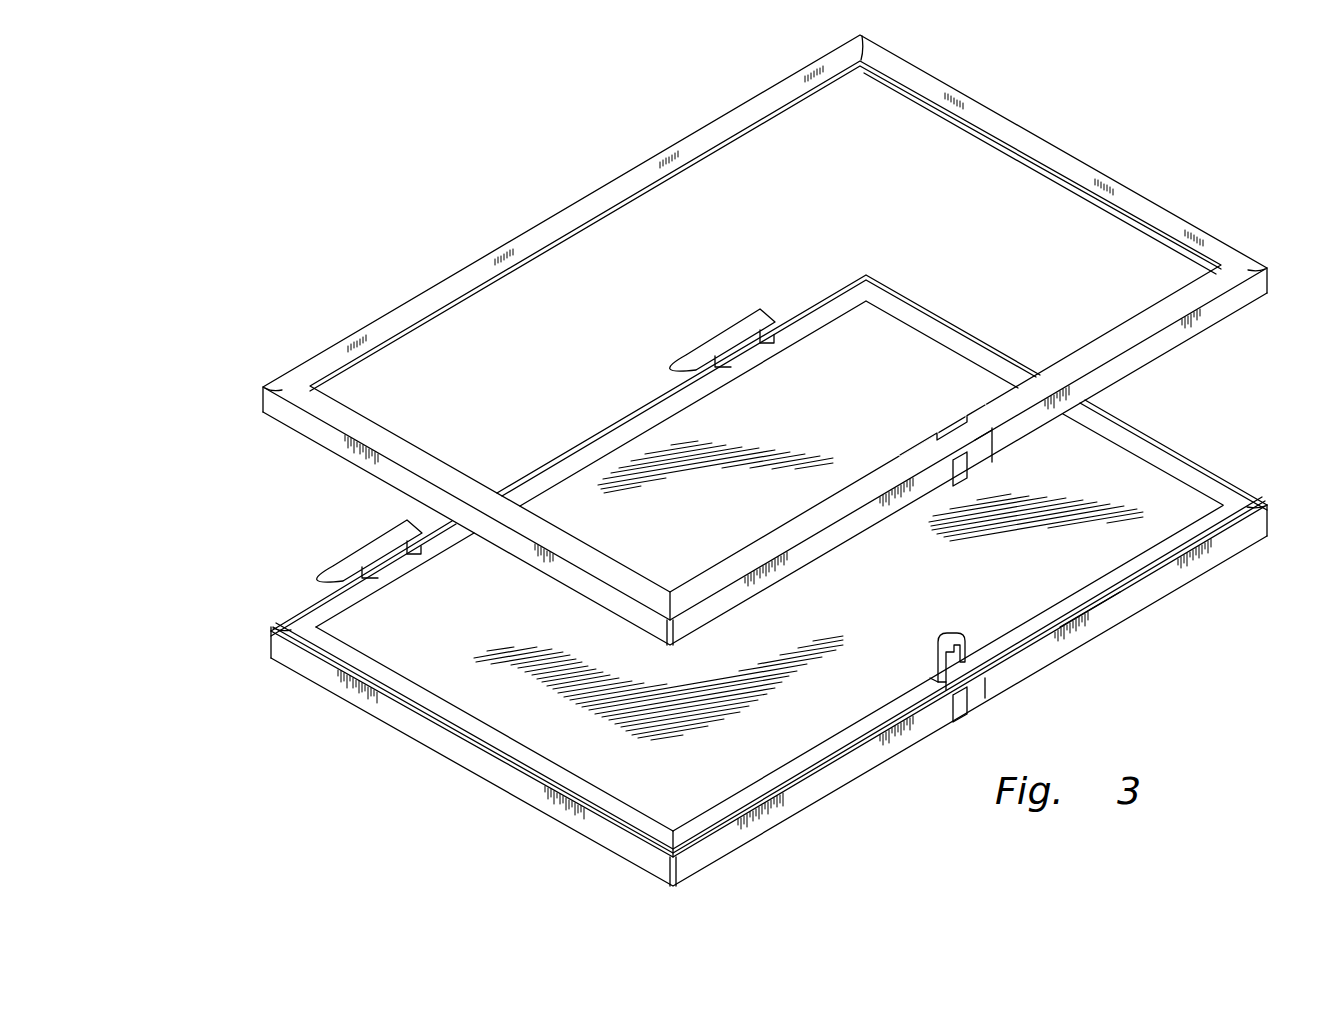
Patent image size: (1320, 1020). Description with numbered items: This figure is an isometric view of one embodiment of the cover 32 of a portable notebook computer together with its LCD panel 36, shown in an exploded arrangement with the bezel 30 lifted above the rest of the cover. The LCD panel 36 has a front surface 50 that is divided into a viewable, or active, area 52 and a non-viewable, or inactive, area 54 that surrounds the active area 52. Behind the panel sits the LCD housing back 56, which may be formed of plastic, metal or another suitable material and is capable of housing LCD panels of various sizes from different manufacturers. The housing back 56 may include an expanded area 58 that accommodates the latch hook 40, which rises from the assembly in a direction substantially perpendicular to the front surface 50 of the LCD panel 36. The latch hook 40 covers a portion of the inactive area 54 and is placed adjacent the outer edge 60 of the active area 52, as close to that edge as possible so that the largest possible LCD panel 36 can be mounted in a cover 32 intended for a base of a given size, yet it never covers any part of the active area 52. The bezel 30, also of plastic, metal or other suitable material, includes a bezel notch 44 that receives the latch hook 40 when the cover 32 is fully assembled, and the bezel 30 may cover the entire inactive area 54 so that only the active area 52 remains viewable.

The bezel 30 is at (765, 340).
The cover 32 is at (717, 591).
The LCD panel 36 is at (761, 724).
The latch hook 40 is at (942, 636).
The bezel notch 44 is at (946, 427).
The front surface 50 is at (367, 638).
The active area 52 is at (487, 706).
The inactive area 54 is at (782, 778).
The LCD housing back 56 is at (703, 860).
The expanded area 58 is at (978, 705).
The outer edge 60 is at (1088, 585).